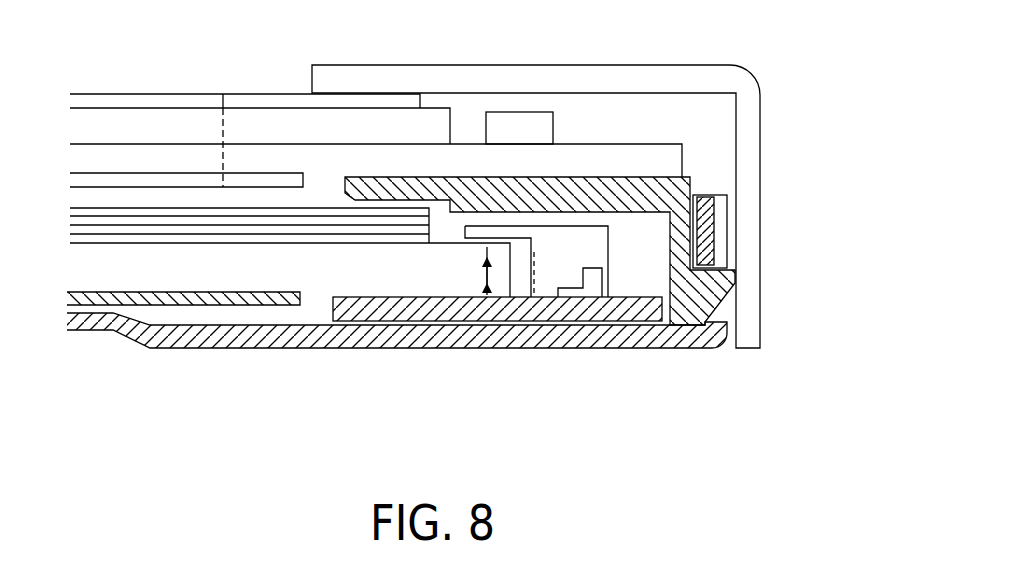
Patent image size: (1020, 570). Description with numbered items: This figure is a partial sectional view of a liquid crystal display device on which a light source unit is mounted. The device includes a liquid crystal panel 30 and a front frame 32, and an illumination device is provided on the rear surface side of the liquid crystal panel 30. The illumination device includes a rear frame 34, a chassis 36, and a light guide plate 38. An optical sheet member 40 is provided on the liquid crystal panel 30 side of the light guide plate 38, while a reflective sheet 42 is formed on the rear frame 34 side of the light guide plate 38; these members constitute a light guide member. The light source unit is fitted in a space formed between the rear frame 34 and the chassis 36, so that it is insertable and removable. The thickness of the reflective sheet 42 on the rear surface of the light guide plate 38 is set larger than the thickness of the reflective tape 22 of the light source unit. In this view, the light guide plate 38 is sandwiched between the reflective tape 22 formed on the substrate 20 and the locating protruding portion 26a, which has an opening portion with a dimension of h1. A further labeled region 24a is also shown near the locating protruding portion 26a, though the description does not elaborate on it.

The liquid crystal panel 30 is at (185, 120).
The optical sheet member 40 is at (260, 213).
The front frame 32 is at (441, 78).
The locating protruding portion 26a is at (505, 226).
The chassis 36 is at (683, 188).
The recess portion 24a is at (593, 245).
The reflective sheet 42 is at (207, 298).
The light guide plate 38 is at (322, 277).
The reflective tape 22 is at (437, 299).
The substrate 20 is at (548, 309).
The rear frame 34 is at (615, 338).
The dimension of opening portion h1 is at (485, 268).